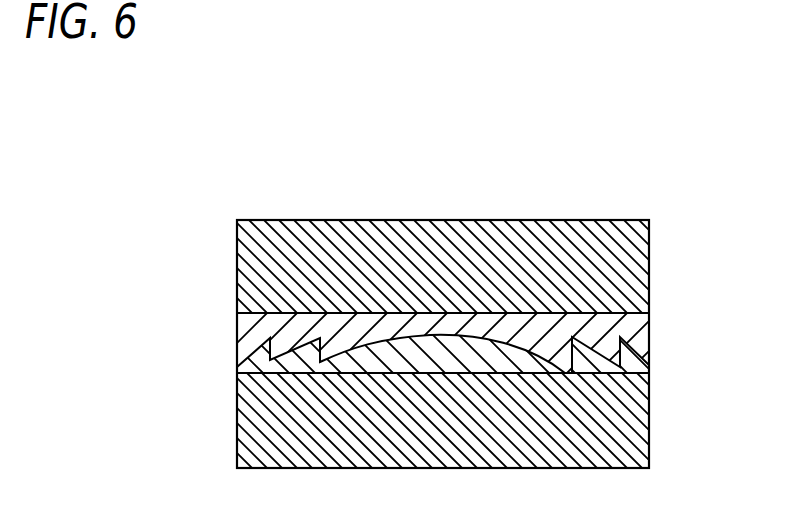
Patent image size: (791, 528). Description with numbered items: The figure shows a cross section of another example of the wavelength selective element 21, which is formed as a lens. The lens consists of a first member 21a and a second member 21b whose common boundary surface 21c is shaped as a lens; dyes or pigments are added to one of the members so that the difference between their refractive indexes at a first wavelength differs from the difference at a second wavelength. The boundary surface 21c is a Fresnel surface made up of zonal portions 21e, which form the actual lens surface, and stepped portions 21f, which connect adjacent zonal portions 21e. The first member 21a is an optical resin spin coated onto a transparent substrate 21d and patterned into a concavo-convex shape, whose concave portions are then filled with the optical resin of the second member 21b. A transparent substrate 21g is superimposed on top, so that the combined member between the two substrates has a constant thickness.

The wavelength selective element 21 is at (614, 240).
The first member 21a is at (237, 368).
The second member 21b is at (237, 316).
The boundary surface 21c is at (382, 342).
The transparent substrate 21d is at (265, 425).
The zonal portions 21e is at (468, 336).
The stepped portions 21f is at (572, 338).
The transparent substrate 21g is at (236, 220).